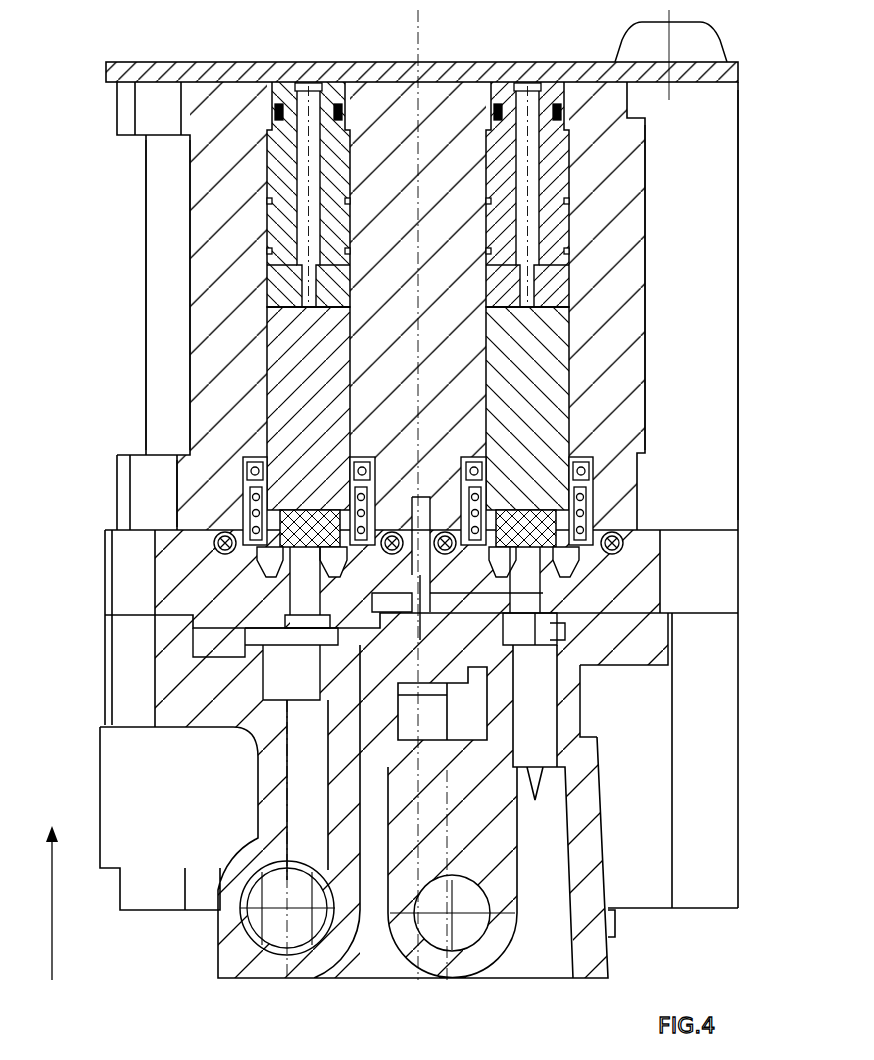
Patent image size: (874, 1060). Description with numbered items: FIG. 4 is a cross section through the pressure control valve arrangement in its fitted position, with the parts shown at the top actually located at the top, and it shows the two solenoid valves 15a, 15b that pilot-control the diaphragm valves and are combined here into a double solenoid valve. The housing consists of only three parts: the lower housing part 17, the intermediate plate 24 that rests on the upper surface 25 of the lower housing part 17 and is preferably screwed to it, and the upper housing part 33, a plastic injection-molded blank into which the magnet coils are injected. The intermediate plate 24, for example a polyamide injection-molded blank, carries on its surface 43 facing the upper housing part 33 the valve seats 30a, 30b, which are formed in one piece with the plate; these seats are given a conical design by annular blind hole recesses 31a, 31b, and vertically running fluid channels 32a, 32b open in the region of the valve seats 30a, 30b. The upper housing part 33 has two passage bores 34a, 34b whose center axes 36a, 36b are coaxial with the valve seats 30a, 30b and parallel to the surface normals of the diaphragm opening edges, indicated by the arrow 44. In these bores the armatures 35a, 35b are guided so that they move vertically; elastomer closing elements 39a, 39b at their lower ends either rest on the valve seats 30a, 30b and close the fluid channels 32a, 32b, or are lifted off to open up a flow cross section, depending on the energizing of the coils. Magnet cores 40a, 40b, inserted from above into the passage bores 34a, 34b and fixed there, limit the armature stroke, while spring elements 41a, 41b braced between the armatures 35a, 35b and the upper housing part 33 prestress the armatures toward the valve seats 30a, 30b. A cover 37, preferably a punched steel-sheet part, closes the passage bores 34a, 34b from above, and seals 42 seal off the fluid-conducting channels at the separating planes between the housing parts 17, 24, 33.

The cover 37 is at (570, 72).
The upper housing part 33 is at (627, 277).
The solenoid valve 15a is at (166, 345).
The solenoid valve 15b is at (670, 360).
The center axis 36a is at (307, 163).
The center axis 36b is at (550, 167).
The magnet core 40a is at (280, 231).
The magnet core 40b is at (540, 235).
The passage bore 34a is at (275, 305).
The passage bore 34b is at (570, 306).
The armature 35a is at (273, 395).
The armature 35b is at (553, 420).
The closing element 39a is at (250, 495).
The closing element 39b is at (590, 468).
The spring element 41a is at (248, 512).
The spring element 41b is at (600, 490).
The surface 43 is at (197, 527).
The seal 42 is at (157, 542).
The valve seat 30a is at (320, 550).
The valve seat 30b is at (622, 518).
The annular blind hole recess 31a is at (265, 560).
The annular blind hole recess 31b is at (560, 550).
The fluid channel 32a is at (292, 580).
The fluid channel 32b is at (440, 575).
The upper surface 25 is at (610, 585).
The intermediate plate 24 is at (657, 600).
The lower housing part 17 is at (170, 680).
The arrow 44 is at (52, 945).